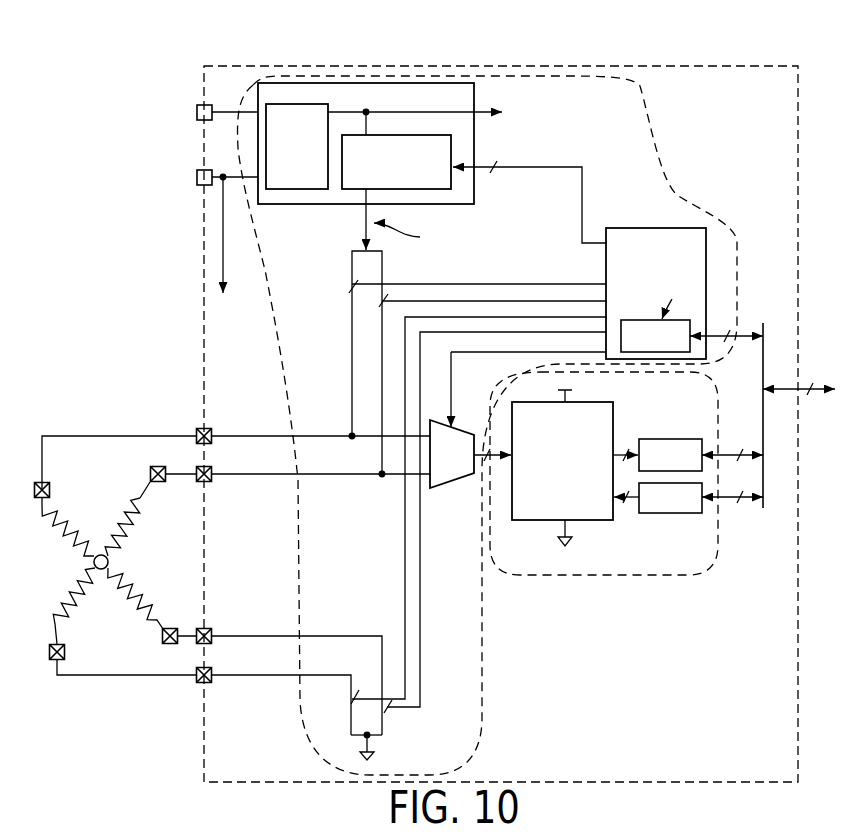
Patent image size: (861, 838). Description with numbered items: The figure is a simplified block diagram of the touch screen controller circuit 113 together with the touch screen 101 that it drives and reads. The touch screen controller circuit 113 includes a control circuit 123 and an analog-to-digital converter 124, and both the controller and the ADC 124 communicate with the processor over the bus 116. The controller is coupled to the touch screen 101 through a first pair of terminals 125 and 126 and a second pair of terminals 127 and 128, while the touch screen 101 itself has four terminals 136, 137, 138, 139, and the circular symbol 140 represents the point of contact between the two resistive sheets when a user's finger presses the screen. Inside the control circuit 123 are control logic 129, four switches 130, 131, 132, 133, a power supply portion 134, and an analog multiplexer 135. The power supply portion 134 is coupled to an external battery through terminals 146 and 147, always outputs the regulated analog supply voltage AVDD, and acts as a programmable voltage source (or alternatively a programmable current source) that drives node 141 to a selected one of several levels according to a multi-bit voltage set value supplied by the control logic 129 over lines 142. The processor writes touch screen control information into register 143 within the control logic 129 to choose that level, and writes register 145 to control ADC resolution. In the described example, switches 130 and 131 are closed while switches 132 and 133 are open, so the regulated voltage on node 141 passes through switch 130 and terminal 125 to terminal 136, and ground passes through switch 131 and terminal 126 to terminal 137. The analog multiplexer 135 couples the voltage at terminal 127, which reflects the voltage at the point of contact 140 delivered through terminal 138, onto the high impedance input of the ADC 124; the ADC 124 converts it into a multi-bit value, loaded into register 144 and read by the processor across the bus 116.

The touch screen 101 is at (108, 405).
The touch screen controller circuit 113 is at (688, 66).
The bus 116 is at (763, 411).
The control circuit 123 is at (695, 205).
The analog-to-digital converter 124 is at (613, 578).
The terminal 125 is at (200, 428).
The terminal 126 is at (200, 628).
The terminal 127 is at (212, 482).
The terminal 128 is at (212, 683).
The control logic 129 is at (629, 228).
The switch 130 is at (349, 287).
The switch 131 is at (385, 715).
The switch 132 is at (378, 300).
The switch 133 is at (349, 698).
The power supply portion 134 is at (345, 101).
The analog multiplexer 135 is at (441, 462).
The terminal 136 is at (50, 484).
The terminal 137 is at (163, 636).
The terminal 138 is at (150, 474).
The terminal 139 is at (65, 652).
The point of contact 140 is at (108, 562).
The node 141 is at (364, 216).
The lines 142 is at (582, 183).
The register 143 is at (636, 320).
The register 144 is at (651, 439).
The register 145 is at (670, 513).
The terminal 146 is at (197, 106).
The terminal 147 is at (197, 171).